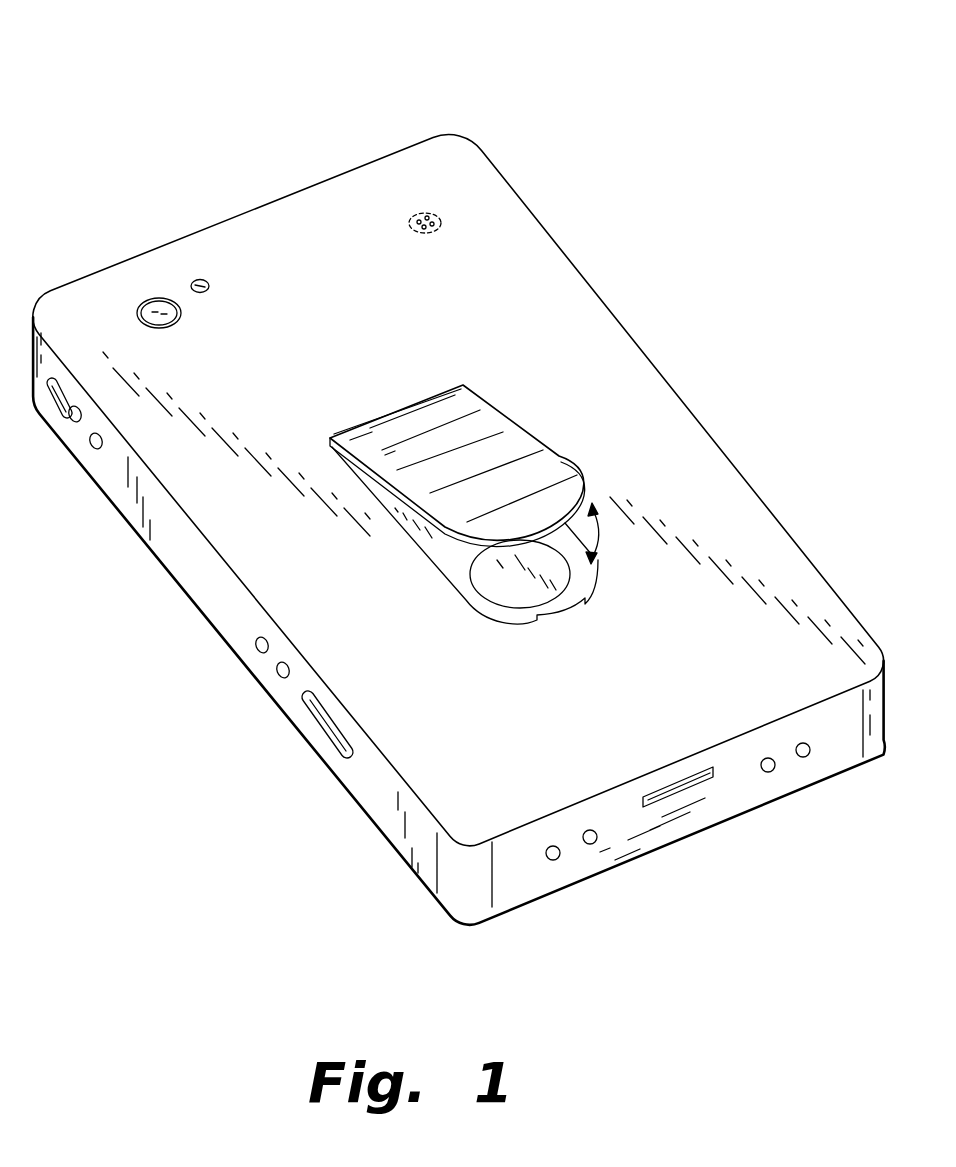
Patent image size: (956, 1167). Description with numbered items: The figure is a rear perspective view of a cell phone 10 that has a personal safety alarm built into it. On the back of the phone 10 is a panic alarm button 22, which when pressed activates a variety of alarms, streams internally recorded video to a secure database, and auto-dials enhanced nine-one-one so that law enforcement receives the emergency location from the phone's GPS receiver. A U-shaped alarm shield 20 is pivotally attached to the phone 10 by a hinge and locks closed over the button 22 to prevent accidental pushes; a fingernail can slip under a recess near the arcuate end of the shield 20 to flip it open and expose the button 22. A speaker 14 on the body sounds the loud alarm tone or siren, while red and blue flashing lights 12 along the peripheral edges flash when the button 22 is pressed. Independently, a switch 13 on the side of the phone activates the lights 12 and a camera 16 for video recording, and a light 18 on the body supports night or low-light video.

The cell phone 10 is at (753, 108).
The flashing lights 12 is at (72, 425).
The switch 13 is at (330, 745).
The speaker 14 is at (428, 212).
The camera 16 is at (153, 298).
The light 18 is at (201, 279).
The alarm shield 20 is at (538, 436).
The panic alarm button 22 is at (514, 602).